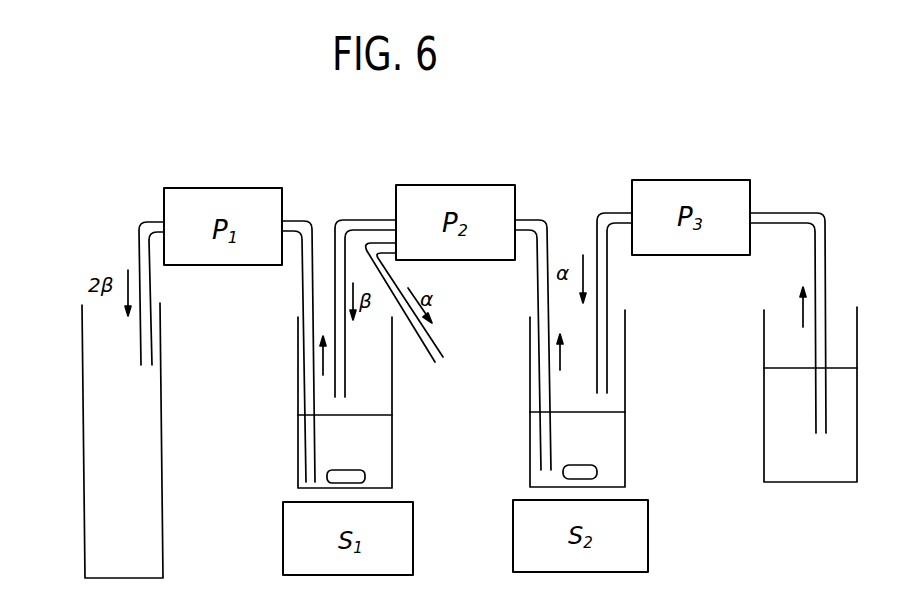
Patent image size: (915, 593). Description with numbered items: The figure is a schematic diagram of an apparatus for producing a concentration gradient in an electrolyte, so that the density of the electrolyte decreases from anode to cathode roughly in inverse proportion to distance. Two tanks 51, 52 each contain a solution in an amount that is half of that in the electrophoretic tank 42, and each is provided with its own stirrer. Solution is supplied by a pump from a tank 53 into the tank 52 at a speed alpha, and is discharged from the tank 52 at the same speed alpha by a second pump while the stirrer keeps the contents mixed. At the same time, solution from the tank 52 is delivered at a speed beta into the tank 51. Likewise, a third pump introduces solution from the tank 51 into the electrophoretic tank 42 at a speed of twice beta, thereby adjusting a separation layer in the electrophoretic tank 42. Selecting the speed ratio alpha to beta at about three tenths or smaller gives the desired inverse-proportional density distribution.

The electrophoretic tank 42 is at (153, 508).
The tank 51 is at (387, 387).
The tank 52 is at (618, 383).
The tank 53 is at (852, 403).